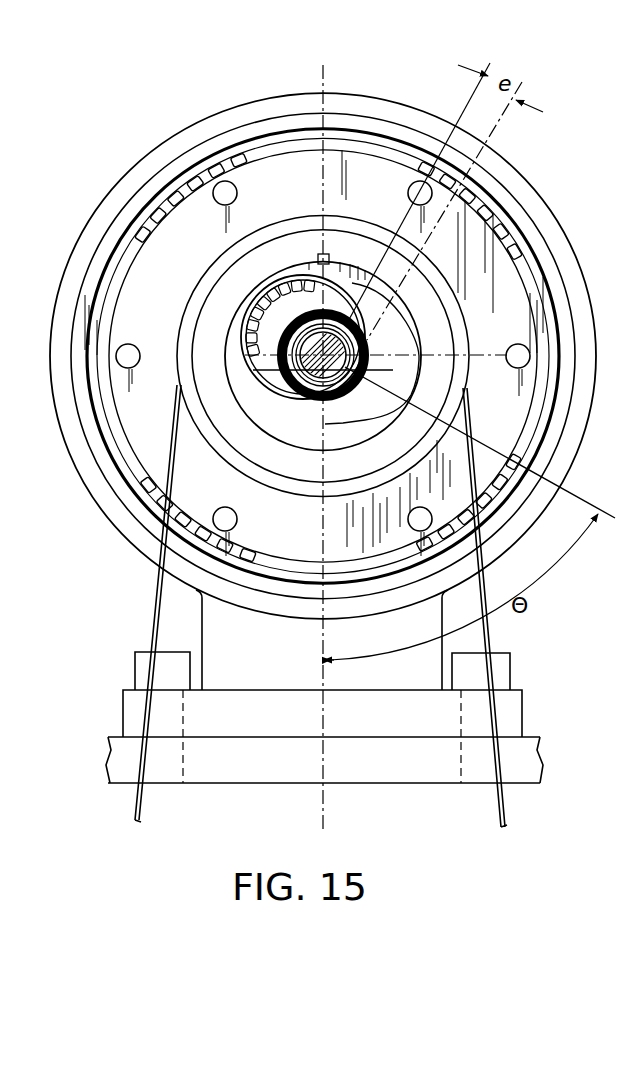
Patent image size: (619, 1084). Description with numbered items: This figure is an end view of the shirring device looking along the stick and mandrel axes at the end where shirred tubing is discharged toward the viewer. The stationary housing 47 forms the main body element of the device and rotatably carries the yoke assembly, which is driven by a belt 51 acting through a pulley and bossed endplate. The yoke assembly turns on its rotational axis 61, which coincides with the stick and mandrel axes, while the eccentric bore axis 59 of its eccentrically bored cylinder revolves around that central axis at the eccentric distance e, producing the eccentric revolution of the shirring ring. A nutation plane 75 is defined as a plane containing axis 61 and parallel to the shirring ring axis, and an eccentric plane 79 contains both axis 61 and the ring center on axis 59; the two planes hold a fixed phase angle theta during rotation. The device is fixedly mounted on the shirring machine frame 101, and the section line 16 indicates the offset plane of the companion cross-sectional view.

The section line 16- 16 is at (318, 75).
The stationary housing 47 is at (532, 187).
The belt 51 is at (152, 618).
The eccentric bore axis 59 is at (346, 368).
The rotational axis of yoke assembly 61 is at (292, 382).
The nutation plane 75 is at (324, 677).
The eccentric plane 79 is at (578, 497).
The shirring machine frame 101 is at (528, 762).